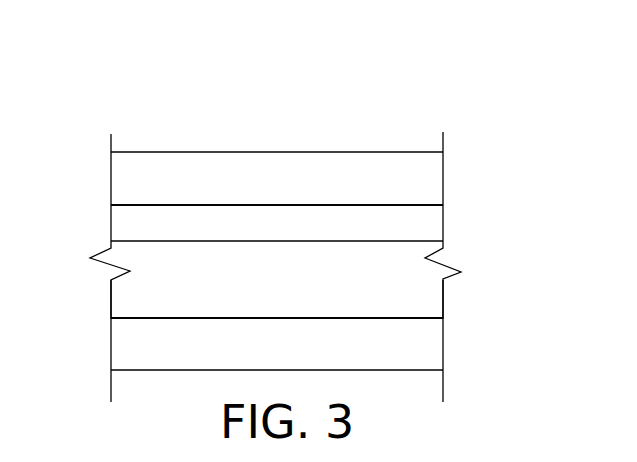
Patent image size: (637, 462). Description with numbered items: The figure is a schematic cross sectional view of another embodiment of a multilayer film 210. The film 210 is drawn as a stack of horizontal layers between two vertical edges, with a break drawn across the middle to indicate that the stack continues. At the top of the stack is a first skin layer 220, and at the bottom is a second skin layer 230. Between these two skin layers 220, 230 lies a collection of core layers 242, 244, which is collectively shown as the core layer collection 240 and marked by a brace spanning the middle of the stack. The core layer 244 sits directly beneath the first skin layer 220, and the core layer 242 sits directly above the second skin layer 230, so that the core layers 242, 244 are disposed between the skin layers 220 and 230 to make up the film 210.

The multilayer film 210 is at (135, 112).
The first skin layer 220 is at (422, 164).
The core layer 244 is at (422, 221).
The core layer 242 is at (422, 289).
The collection of core layers 240 is at (85, 207).
The second skin layer 230 is at (422, 348).